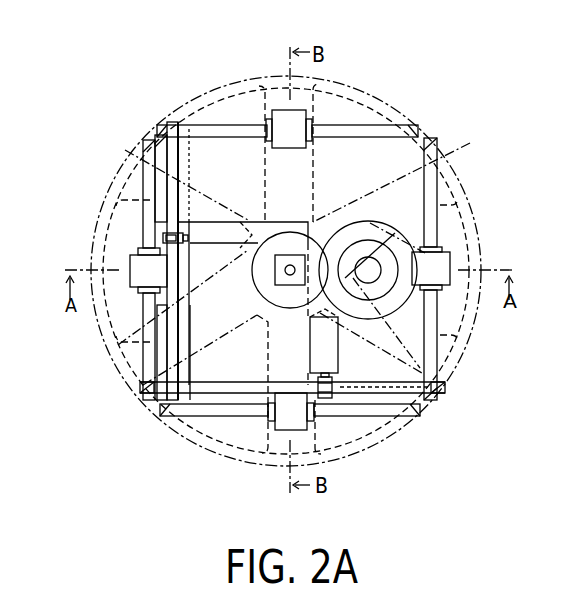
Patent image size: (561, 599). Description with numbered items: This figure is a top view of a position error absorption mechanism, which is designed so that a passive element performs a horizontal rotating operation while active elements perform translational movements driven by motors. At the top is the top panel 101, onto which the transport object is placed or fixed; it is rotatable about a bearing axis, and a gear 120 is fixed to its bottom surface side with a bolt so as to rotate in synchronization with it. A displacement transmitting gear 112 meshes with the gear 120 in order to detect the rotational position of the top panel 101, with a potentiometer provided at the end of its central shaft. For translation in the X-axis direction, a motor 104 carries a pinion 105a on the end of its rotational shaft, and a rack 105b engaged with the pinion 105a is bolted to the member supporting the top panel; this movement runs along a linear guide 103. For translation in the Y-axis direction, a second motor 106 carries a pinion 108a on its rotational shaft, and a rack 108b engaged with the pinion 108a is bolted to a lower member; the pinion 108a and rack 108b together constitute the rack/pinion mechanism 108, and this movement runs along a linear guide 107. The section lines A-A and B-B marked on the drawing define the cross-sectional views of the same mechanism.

The top panel 101 is at (253, 72).
The linear guide 103 is at (147, 182).
The motor 104 is at (232, 235).
The pinion 105a is at (167, 236).
The rack 105b is at (173, 143).
The motor 106 is at (333, 352).
The linear guide 107 is at (367, 130).
The rack/pinion mechanism 108 is at (472, 484).
The pinion 108a is at (328, 397).
The rack 108b is at (403, 390).
The displacement transmitting gear 112 is at (378, 223).
The gear 120 is at (320, 245).